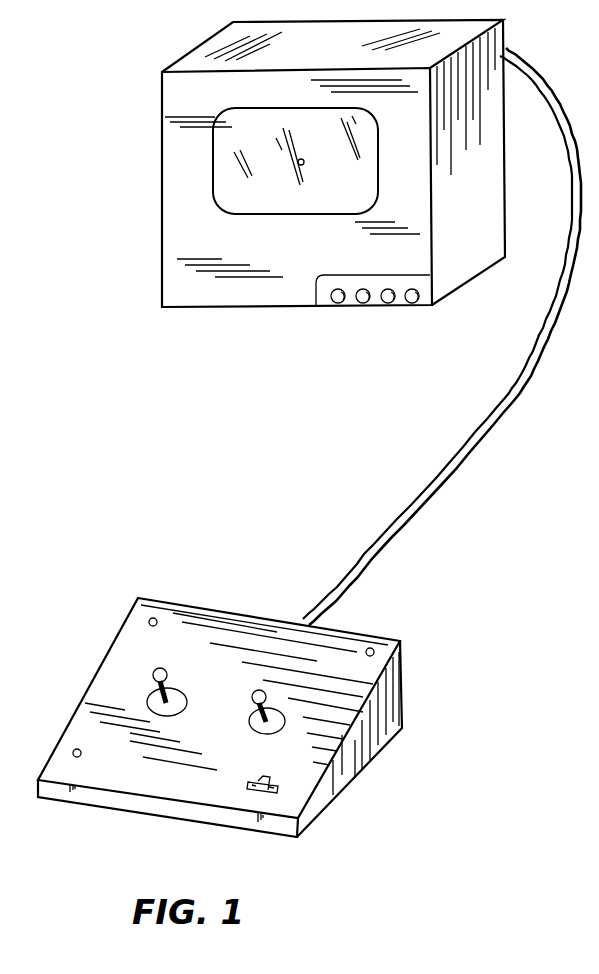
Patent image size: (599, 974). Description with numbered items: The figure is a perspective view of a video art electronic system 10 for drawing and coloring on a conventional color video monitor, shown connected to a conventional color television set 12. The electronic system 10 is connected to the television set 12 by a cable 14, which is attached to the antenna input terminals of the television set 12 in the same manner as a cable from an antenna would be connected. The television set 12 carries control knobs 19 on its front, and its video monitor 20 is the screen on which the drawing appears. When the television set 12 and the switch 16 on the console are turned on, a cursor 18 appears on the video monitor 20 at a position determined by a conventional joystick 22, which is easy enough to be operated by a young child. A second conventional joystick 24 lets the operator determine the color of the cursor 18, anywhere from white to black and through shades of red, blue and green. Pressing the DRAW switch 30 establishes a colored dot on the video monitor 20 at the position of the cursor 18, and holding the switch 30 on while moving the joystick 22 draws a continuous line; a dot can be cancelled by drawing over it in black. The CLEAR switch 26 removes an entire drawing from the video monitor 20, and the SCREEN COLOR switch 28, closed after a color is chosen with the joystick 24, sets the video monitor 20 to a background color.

The video art electronic system 10 is at (64, 706).
The color television set 12 is at (166, 245).
The cable 14 is at (380, 545).
The switch 16 is at (258, 798).
The cursor 18 is at (304, 164).
The control knobs 19 is at (415, 303).
The video monitor 20 is at (221, 140).
The joystick 22 is at (253, 712).
The joystick 24 is at (145, 690).
The CLEAR switch 26 is at (374, 650).
The SCREEN COLOR switch 28 is at (156, 618).
The DRAW switch 30 is at (73, 753).